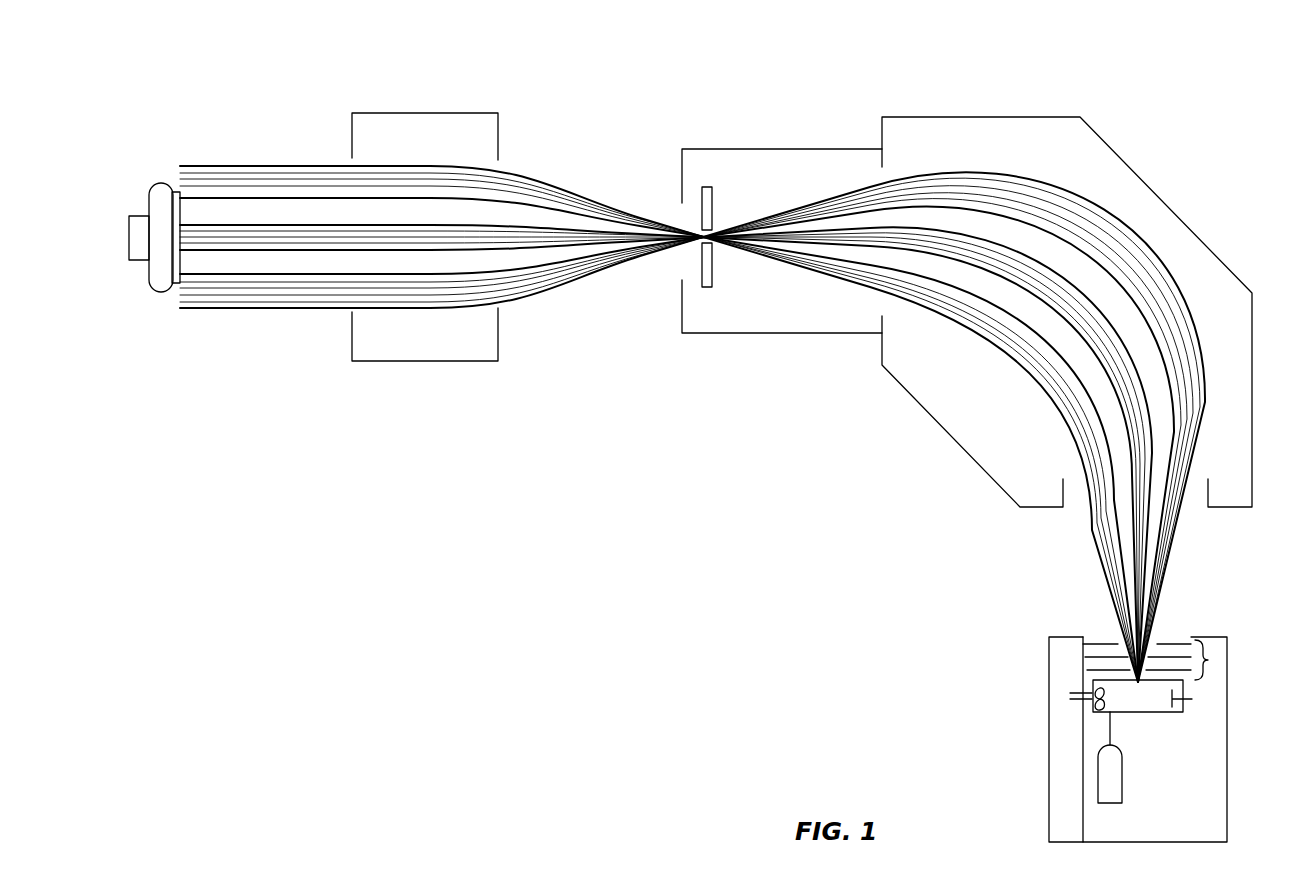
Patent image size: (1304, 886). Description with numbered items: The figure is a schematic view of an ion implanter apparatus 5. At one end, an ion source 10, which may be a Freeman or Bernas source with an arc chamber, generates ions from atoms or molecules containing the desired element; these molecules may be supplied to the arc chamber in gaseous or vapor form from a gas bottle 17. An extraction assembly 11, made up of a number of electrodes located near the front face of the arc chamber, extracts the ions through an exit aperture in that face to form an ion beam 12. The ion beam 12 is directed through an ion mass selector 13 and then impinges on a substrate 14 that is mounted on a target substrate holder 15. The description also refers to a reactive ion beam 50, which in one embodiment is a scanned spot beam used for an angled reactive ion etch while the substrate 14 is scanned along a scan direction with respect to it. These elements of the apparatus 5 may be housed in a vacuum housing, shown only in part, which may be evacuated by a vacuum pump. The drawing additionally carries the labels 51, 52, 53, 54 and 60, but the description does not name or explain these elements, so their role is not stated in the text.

The ion implanter apparatus 5 is at (618, 86).
The ion source 10 is at (1165, 713).
The extraction assembly 11 is at (1210, 660).
The ion beam 12 is at (737, 424).
The ion mass selector 13 is at (1160, 197).
The substrate 14 is at (178, 200).
The target substrate holder 15 is at (163, 273).
The gas bottle 17 is at (1098, 758).
The reactive ion beam 50 is at (1098, 327).
The inner beamlet 51 is at (1106, 555).
The outer beamlet 52 is at (1172, 525).
The inner magnet pole 53 is at (953, 410).
The resolving aperture 54 is at (709, 268).
The focusing lens 60 is at (372, 113).